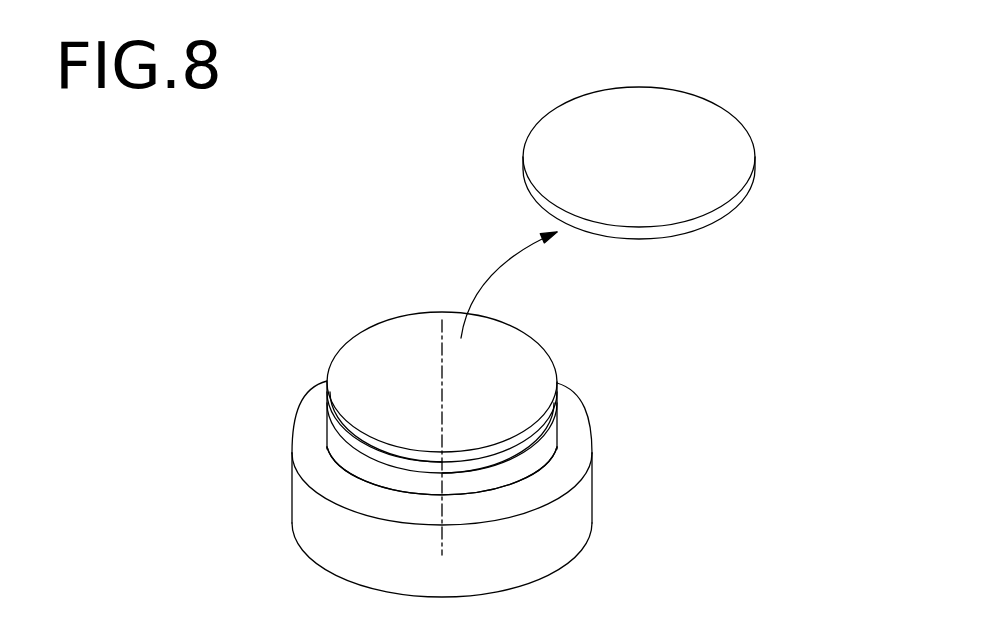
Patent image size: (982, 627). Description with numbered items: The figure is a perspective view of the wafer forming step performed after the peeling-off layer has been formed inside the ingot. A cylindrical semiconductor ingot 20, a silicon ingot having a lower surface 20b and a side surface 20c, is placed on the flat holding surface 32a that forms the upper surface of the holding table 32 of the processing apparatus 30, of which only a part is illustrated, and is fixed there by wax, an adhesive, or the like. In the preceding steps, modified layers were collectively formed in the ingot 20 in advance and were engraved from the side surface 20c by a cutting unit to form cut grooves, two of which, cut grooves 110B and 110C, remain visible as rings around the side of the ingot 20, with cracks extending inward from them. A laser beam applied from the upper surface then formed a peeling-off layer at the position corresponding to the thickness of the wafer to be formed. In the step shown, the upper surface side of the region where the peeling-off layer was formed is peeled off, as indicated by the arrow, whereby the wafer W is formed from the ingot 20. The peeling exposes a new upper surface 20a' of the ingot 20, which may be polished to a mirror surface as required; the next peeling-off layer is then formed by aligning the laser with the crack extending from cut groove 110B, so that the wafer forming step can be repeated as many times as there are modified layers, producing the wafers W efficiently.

The wafer W is at (752, 138).
The processing apparatus 30 is at (427, 380).
The semiconductor ingot 20 is at (470, 400).
The new upper surface 20a' is at (421, 376).
The lower surface 20b is at (540, 478).
The side surface 20c is at (538, 459).
The holding table 32 is at (395, 489).
The holding surface 32a is at (312, 430).
The cut groove 110B is at (393, 458).
The cut groove 110C is at (450, 477).